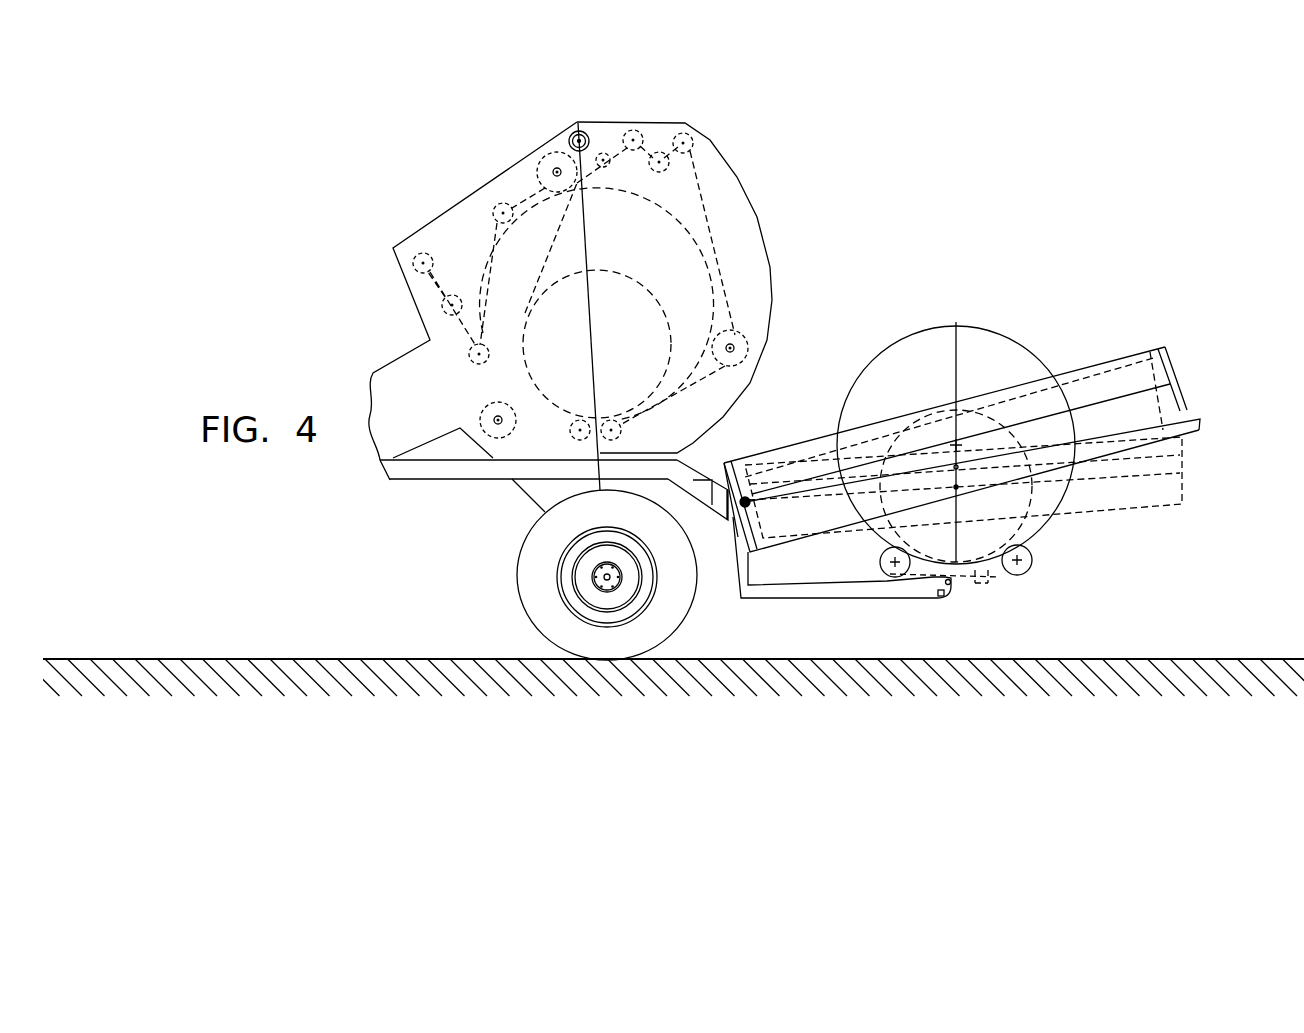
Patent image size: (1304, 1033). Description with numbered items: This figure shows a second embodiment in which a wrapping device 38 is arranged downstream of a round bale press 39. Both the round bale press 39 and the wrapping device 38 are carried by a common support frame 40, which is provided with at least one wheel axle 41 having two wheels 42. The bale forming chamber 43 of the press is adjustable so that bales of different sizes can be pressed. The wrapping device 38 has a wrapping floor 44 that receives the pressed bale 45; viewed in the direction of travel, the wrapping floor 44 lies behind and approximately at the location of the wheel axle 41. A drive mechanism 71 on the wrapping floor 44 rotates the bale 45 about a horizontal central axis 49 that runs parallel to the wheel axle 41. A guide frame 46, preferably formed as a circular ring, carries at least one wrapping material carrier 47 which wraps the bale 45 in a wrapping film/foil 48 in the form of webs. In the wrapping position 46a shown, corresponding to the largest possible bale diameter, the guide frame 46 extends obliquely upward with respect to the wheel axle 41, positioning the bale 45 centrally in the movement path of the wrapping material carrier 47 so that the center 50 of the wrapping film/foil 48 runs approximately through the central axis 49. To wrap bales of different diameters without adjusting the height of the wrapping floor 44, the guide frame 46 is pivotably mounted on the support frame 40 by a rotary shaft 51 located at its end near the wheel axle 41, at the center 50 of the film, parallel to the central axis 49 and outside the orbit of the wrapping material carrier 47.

The wrapping device 38 is at (888, 650).
The round bale press 39 is at (557, 261).
The support frame 40 is at (655, 468).
The wheel axle 41 is at (595, 568).
The wheels 42 is at (553, 613).
The bale forming chamber 43 is at (635, 222).
The wrapping floor 44 is at (960, 578).
The pressed bale 45 is at (985, 351).
The guide frame 46 is at (976, 454).
The wrapping position 46a is at (1160, 455).
The wrapping material carrier 47 is at (1160, 371).
The wrapping film/foil 48 is at (1143, 402).
The central axis 49 is at (956, 445).
The center of the wrapping film/foil 50 is at (1108, 403).
The rotary shaft 51 is at (724, 463).
The drive mechanism 71 is at (995, 618).